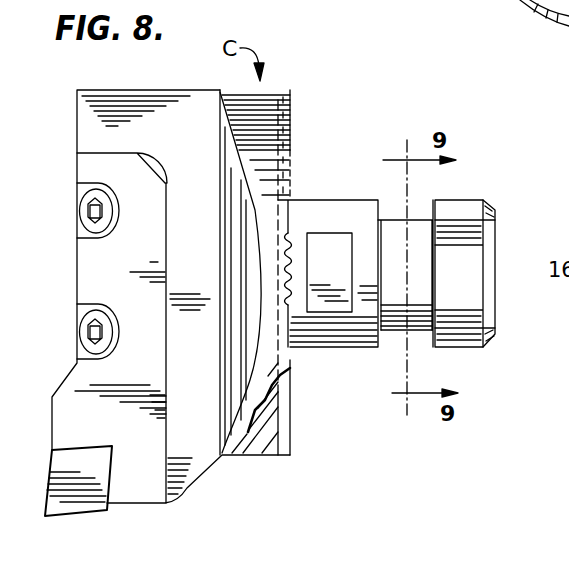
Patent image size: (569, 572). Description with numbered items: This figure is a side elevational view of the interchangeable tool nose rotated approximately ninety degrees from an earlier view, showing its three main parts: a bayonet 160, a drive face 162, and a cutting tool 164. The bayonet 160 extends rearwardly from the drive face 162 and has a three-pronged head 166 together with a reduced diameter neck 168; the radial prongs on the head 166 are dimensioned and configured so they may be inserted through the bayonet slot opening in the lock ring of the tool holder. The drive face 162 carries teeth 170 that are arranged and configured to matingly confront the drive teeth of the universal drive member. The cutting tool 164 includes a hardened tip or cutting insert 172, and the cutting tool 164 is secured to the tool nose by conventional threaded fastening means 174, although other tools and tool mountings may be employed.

The bayonet 160 is at (328, 337).
The drive face 162 is at (263, 108).
The cutting tool 164 is at (90, 277).
The three-pronged head 166 is at (460, 272).
The reduced diameter neck 168 is at (393, 312).
The teeth 170 is at (303, 263).
The cutting insert 172 is at (63, 502).
The threaded fastening means 174 is at (88, 332).